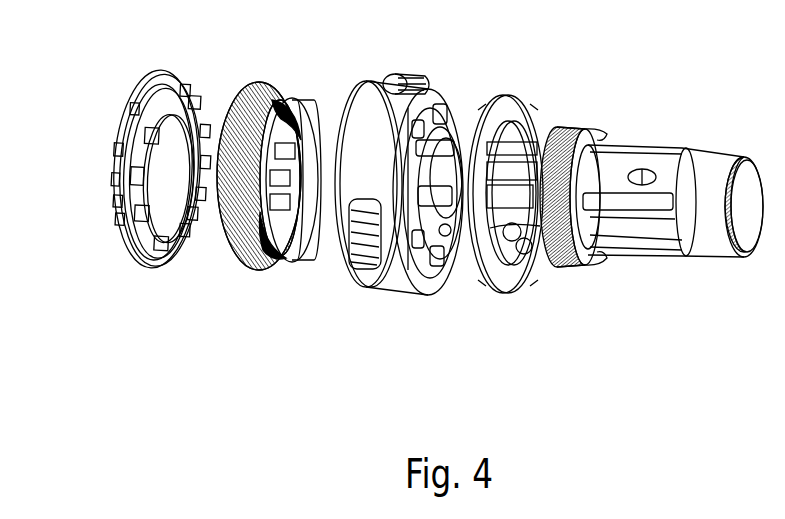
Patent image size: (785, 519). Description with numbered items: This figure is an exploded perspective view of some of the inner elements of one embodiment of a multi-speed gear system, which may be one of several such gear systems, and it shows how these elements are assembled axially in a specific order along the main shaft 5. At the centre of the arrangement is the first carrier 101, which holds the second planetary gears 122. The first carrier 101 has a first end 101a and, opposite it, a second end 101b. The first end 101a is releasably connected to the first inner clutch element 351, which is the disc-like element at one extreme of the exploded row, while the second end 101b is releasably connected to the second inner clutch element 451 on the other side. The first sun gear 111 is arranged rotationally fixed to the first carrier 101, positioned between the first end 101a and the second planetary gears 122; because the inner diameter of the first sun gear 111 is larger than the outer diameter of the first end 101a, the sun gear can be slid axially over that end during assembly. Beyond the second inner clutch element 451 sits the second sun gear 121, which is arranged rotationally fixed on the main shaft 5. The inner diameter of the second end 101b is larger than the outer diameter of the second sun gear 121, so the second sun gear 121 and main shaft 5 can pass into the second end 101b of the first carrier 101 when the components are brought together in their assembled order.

The first inner clutch element 351 is at (168, 73).
The first sun gear 111 is at (272, 87).
The first carrier 101 is at (431, 185).
The first end 101a is at (310, 260).
The second end 101b is at (453, 270).
The second planetary gears 122 is at (413, 75).
The second inner clutch element 451 is at (508, 95).
The second sun gear 121 is at (593, 133).
The main shaft 5 is at (710, 152).